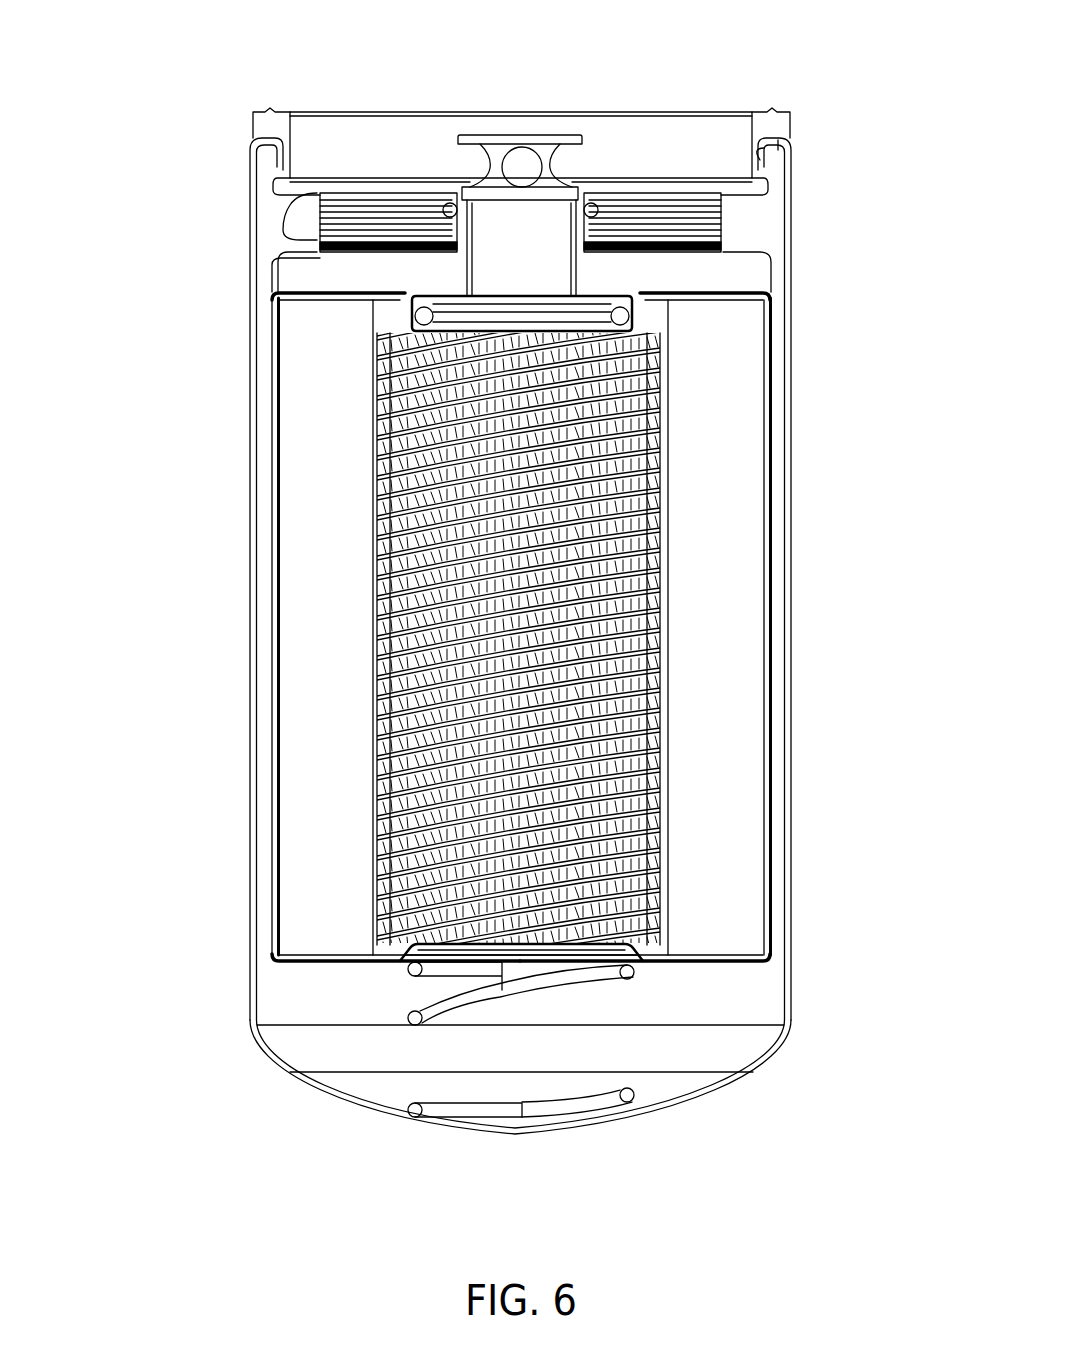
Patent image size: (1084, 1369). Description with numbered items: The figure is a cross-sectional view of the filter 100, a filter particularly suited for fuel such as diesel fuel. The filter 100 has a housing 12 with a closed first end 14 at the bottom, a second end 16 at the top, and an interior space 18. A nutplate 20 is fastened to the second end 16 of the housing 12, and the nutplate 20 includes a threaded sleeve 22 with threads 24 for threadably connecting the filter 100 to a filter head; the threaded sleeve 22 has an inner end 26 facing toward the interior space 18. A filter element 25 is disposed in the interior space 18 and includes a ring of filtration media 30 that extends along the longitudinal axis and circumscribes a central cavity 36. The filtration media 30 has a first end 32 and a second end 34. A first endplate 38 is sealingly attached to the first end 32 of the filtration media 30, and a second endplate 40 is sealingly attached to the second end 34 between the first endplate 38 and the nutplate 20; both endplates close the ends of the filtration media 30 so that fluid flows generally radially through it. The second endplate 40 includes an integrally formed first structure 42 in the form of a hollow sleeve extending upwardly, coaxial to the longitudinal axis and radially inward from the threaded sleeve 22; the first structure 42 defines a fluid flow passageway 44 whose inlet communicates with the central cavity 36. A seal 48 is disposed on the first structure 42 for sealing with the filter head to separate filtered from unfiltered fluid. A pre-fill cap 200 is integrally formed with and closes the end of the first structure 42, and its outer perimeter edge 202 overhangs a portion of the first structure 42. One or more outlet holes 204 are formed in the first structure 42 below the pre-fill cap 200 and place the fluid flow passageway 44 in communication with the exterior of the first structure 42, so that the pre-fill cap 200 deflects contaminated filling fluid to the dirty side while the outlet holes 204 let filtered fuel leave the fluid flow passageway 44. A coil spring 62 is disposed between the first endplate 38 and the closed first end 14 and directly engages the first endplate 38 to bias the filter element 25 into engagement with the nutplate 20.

The filter 100 is at (224, 438).
The housing 12 is at (795, 607).
The closed first end 14 is at (630, 1113).
The second end 16 is at (255, 199).
The interior space 18 is at (262, 580).
The nutplate 20 is at (765, 187).
The threaded sleeve 22 is at (317, 240).
The threads 24 is at (333, 195).
The filter element 25 is at (300, 705).
The inner end 26 is at (320, 250).
The filtration media 30 is at (730, 468).
The first end 32 is at (731, 958).
The second end 34 is at (717, 297).
The central cavity 36 is at (640, 870).
The first endplate 38 is at (290, 963).
The second endplate 40 is at (316, 281).
The first structure 42 is at (583, 233).
The fluid flow passageway 44 is at (542, 267).
The seal 48 is at (597, 197).
The coil spring 62 is at (418, 1012).
The pre-fill cap 200 is at (531, 135).
The outer perimeter edge 202 is at (583, 142).
The outlet holes 204 is at (515, 167).